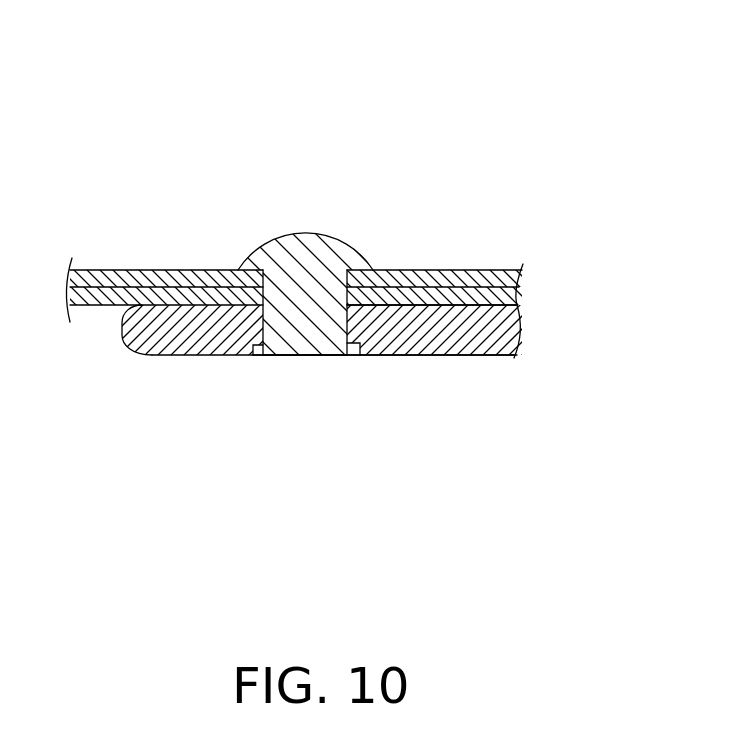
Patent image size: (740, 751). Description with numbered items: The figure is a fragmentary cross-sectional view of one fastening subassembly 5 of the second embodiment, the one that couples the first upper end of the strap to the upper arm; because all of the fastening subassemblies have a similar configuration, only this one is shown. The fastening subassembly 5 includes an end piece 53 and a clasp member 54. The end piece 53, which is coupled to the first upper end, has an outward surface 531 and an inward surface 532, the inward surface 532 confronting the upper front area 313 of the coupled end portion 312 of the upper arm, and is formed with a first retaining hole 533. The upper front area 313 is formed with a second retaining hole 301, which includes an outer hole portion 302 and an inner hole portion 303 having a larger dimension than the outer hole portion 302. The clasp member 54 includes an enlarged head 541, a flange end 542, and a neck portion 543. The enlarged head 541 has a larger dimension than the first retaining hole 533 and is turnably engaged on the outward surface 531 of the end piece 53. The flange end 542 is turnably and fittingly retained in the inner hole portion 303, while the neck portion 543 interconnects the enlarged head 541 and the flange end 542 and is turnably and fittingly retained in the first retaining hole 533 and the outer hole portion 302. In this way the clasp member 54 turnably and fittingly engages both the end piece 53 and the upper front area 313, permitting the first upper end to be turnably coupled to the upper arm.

The fastening subassembly 5 is at (138, 138).
The end piece 53 is at (452, 248).
The outward surface 531 is at (472, 268).
The first retaining hole 533 is at (352, 282).
The inward surface 532 is at (479, 305).
The upper front area 313 is at (453, 330).
The coupled end portion 312 is at (533, 335).
The clasp member 54 is at (317, 208).
The enlarged head 541 is at (287, 250).
The neck portion 543 is at (293, 287).
The flange end 542 is at (265, 353).
The inner hole portion 303 is at (372, 355).
The outer hole portion 302 is at (352, 323).
The second retaining hole 301 is at (327, 428).